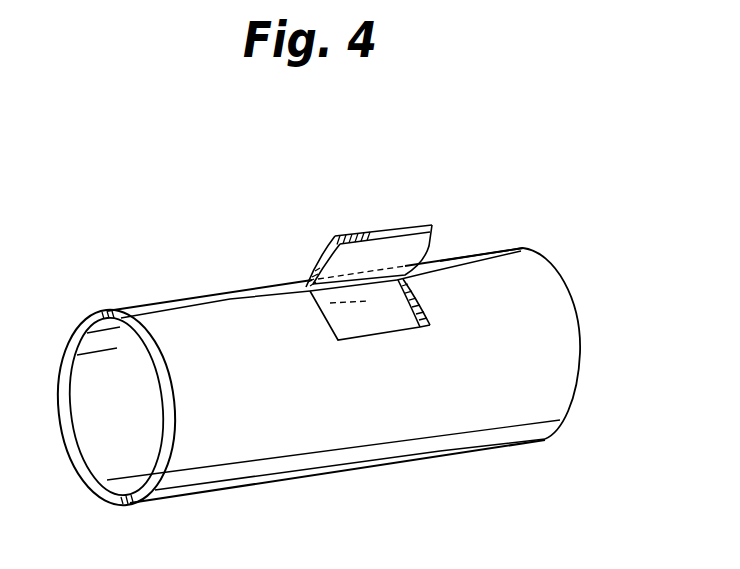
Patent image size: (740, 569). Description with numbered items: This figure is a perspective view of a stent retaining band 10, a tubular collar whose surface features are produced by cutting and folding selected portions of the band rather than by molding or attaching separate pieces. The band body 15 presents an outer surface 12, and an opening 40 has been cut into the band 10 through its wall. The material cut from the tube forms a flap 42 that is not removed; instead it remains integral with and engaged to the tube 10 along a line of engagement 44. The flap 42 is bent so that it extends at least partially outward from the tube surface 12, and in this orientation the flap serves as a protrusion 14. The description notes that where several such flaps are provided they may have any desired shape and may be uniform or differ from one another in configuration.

The stent retaining band 10 is at (572, 258).
The outer surface 12 is at (533, 408).
The protrusion 14 is at (392, 229).
The band body 15 is at (485, 253).
The opening 40 is at (345, 320).
The flap 42 is at (333, 237).
The line of engagement 44 is at (373, 285).